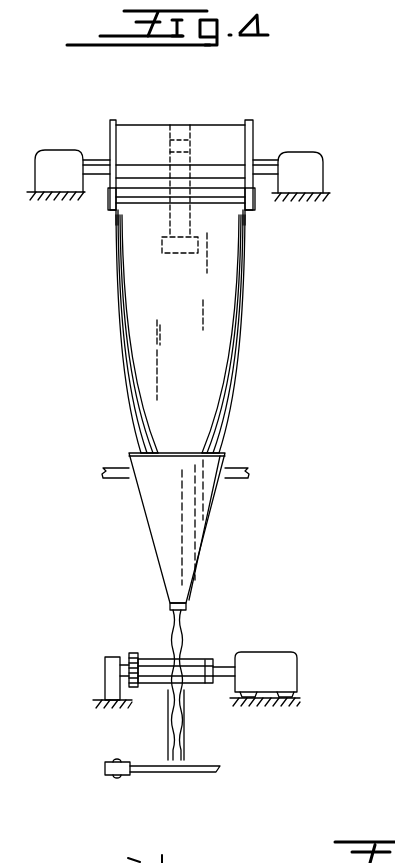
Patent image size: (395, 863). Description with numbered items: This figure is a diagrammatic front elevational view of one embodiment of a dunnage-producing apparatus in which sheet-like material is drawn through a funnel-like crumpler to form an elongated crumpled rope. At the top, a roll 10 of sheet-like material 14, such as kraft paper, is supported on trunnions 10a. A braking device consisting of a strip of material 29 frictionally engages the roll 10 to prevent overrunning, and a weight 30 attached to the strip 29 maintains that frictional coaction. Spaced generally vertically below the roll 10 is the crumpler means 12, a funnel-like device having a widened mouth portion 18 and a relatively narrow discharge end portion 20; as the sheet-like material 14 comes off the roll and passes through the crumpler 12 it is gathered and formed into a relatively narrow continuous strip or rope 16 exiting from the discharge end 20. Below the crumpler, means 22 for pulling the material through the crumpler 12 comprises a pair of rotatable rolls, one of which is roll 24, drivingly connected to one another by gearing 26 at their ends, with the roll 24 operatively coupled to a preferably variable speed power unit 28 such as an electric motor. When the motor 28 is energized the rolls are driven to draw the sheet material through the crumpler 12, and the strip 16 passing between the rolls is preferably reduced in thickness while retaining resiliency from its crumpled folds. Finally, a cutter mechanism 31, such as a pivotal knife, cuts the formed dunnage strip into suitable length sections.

The roll 10 is at (222, 112).
The trunnions 10a is at (96, 160).
The strip of material 29 is at (183, 124).
The weight 30 is at (180, 254).
The sheet-like material 14 is at (220, 296).
The widened mouth portion 18 is at (179, 453).
The crumpler means 12 is at (206, 530).
The discharge end portion 20 is at (188, 612).
The strip or rope 16 is at (180, 632).
The means for pulling 22 is at (198, 690).
The rotatable roll 24 is at (200, 660).
The gearing 26 is at (133, 655).
The power unit 28 is at (280, 665).
The cutter mechanism 31 is at (195, 776).